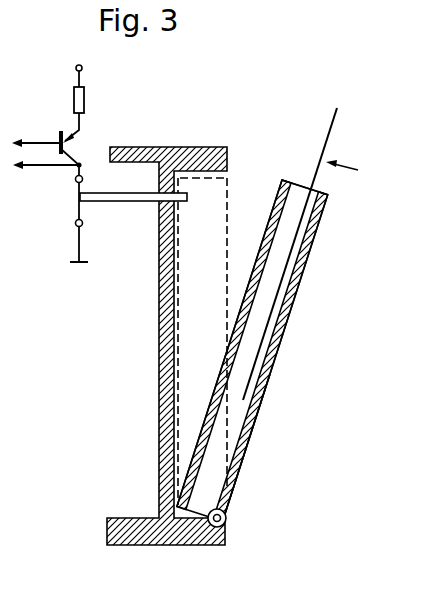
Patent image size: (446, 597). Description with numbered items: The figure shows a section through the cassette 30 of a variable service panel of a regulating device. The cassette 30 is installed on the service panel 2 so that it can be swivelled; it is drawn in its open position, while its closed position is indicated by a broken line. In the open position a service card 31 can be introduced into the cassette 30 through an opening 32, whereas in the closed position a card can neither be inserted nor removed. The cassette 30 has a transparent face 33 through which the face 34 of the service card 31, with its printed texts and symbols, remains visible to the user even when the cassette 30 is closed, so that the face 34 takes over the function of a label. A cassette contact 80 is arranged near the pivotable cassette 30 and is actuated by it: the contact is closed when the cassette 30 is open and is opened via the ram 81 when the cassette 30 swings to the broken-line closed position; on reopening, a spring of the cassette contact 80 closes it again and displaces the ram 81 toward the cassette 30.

The service panel 2 is at (212, 530).
The cassette 30 is at (273, 265).
The service card 31 is at (325, 135).
The opening 32 is at (298, 185).
The transparent face 33 is at (253, 420).
The face 34 is at (355, 171).
The cassette contact 80 is at (76, 210).
The ram 81 is at (129, 202).